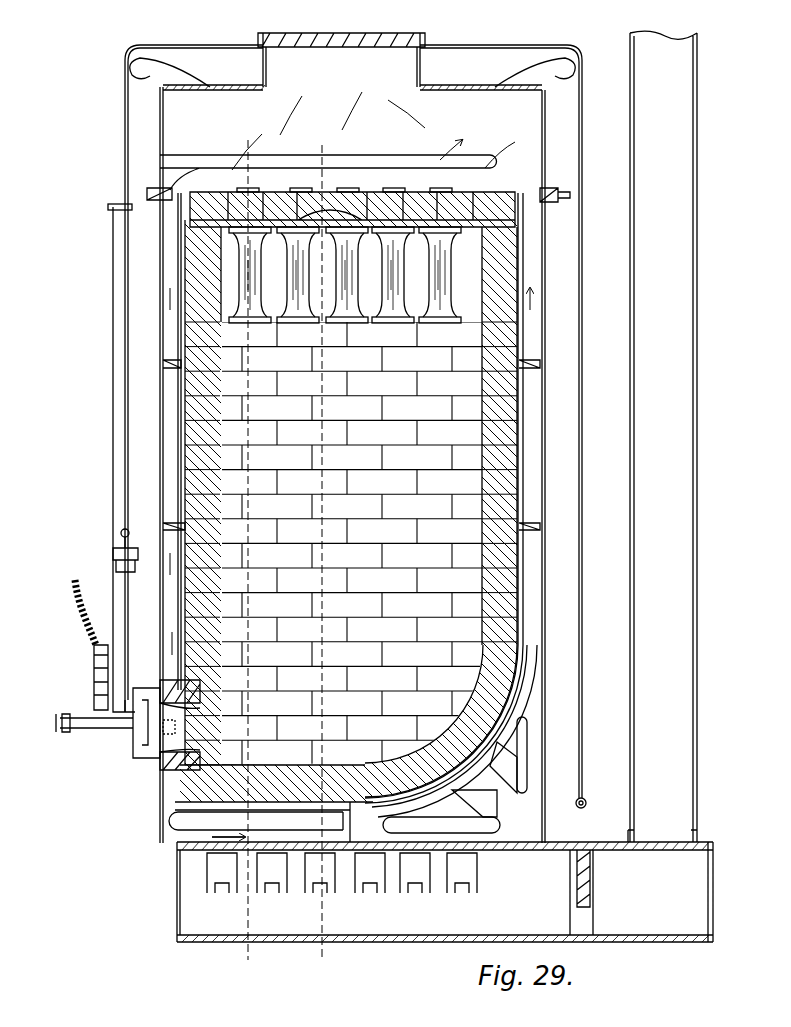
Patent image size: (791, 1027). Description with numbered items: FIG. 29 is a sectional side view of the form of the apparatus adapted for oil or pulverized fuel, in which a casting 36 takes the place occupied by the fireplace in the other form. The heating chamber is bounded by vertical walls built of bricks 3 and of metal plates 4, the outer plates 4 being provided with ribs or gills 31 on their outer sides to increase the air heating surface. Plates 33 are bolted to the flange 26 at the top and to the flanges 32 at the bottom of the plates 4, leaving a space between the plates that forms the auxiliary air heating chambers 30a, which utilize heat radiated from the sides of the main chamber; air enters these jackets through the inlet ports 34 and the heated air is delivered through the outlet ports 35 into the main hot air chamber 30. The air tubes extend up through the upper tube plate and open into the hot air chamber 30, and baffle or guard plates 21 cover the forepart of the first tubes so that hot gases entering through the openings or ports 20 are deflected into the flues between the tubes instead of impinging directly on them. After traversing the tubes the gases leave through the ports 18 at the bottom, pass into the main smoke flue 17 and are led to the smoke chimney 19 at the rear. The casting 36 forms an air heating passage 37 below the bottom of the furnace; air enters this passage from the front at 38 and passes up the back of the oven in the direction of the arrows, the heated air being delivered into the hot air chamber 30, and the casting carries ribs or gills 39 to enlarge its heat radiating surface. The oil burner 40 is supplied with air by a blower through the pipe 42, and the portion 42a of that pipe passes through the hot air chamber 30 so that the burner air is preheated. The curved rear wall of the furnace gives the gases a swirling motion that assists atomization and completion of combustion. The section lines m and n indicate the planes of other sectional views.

The bricks 3 is at (210, 440).
The metal plates 4 is at (180, 524).
The main smoke flue 17 is at (445, 892).
The ports 18 is at (212, 880).
The smoke chimney 19 is at (646, 180).
The openings or ports 20 is at (372, 240).
The baffle or guard plates 21 is at (292, 255).
The flange 26 is at (108, 215).
The hot air chamber 30 is at (462, 110).
The auxiliary air heating chambers 30a is at (170, 420).
The ribs or gills 31 is at (166, 364).
The flanges 32 is at (168, 676).
The plates 33 is at (546, 258).
The inlet ports 34 is at (172, 648).
The outlet ports 35 is at (165, 193).
The casting 36 is at (165, 808).
The air heating passage 37 is at (215, 835).
The front air entry 38 is at (180, 847).
The ribs or gills 39 is at (258, 818).
The oil burner 40 is at (160, 735).
The pipe 42 is at (113, 306).
The portion of the pipe 42a is at (160, 160).
The section line m- m is at (246, 553).
The section line n- n is at (320, 556).